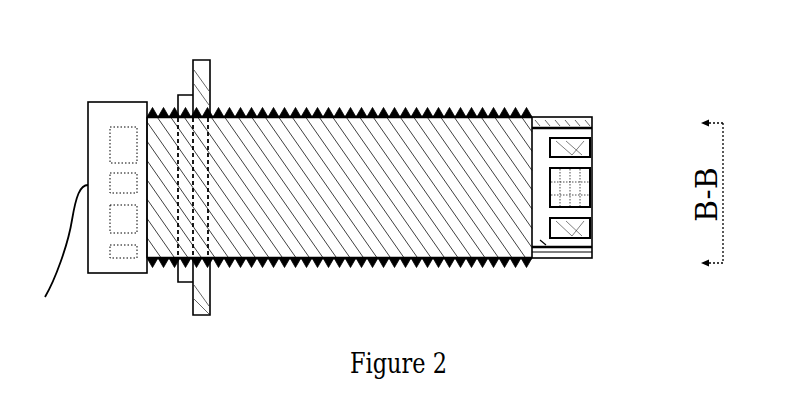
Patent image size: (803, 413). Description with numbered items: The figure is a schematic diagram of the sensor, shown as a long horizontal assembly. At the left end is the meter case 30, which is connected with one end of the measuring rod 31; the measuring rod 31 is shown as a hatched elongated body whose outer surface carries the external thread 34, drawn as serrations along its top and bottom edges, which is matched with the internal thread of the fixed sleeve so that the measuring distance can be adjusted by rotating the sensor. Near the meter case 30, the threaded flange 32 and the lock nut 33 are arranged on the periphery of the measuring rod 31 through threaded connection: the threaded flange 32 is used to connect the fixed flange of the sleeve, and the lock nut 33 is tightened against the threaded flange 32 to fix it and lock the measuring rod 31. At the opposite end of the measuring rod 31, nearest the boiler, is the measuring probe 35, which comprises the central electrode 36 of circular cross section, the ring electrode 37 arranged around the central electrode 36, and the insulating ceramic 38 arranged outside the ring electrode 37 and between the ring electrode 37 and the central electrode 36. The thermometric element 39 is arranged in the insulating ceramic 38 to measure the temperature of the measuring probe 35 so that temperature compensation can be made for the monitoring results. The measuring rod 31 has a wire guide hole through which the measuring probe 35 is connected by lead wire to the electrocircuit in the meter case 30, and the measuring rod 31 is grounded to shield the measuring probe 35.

The meter case 30 is at (88, 102).
The measuring rod 31 is at (317, 140).
The threaded flange 32 is at (210, 60).
The lock nut 33 is at (178, 95).
The external thread 34 is at (422, 108).
The measuring probe 35 is at (562, 122).
The central electrode 36 is at (593, 162).
The ring electrode 37 is at (593, 207).
The insulating ceramic 38 is at (543, 241).
The thermometric element 39 is at (595, 243).